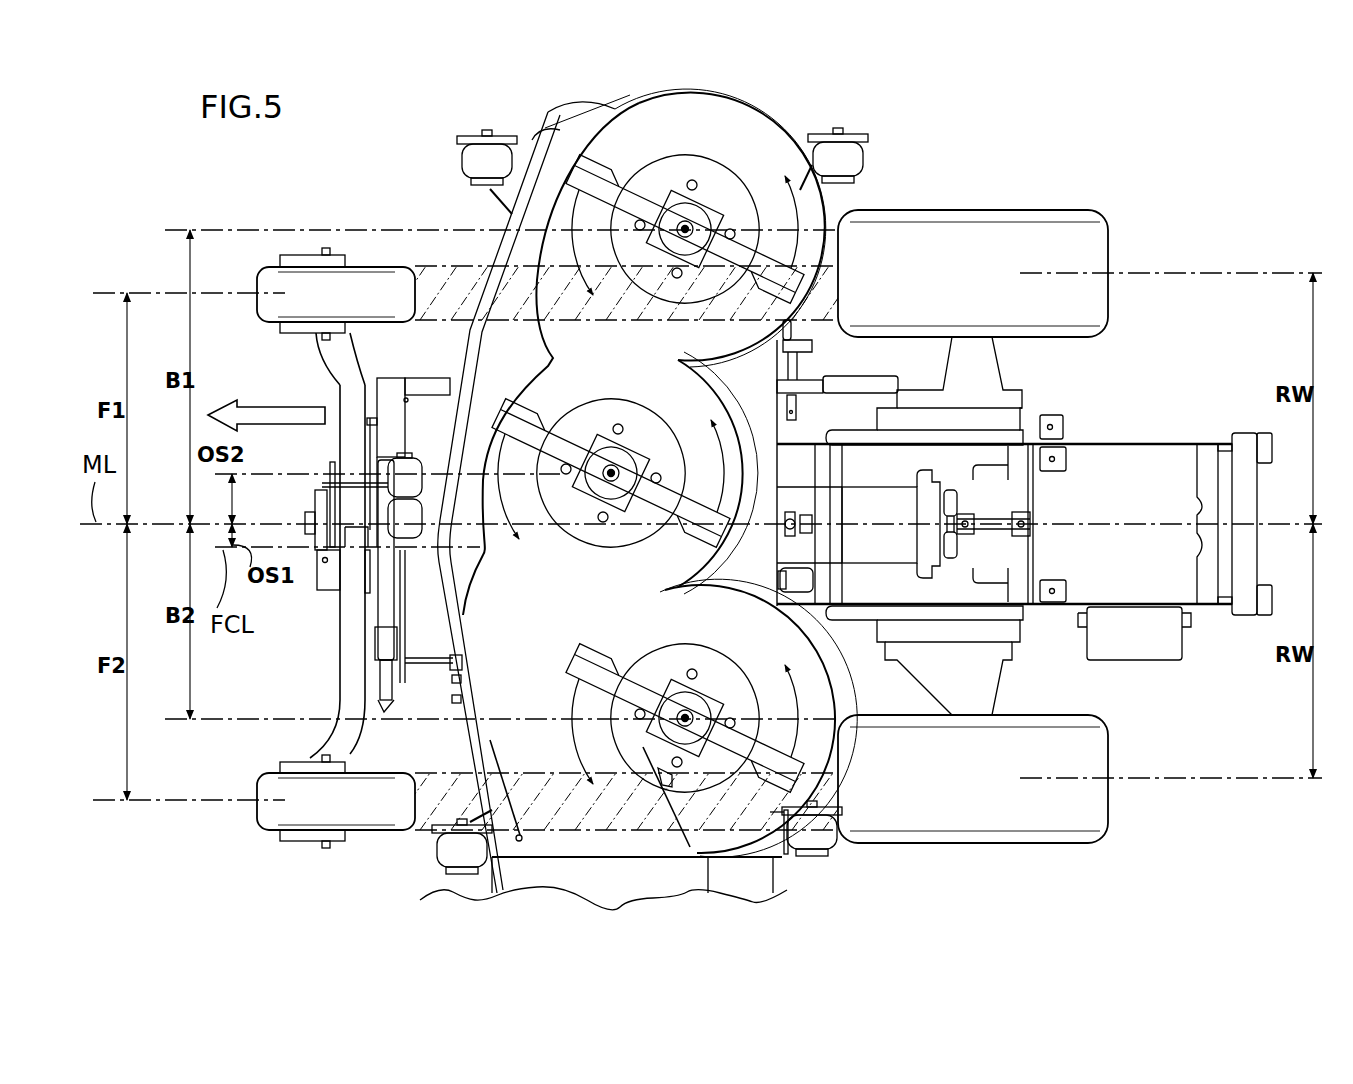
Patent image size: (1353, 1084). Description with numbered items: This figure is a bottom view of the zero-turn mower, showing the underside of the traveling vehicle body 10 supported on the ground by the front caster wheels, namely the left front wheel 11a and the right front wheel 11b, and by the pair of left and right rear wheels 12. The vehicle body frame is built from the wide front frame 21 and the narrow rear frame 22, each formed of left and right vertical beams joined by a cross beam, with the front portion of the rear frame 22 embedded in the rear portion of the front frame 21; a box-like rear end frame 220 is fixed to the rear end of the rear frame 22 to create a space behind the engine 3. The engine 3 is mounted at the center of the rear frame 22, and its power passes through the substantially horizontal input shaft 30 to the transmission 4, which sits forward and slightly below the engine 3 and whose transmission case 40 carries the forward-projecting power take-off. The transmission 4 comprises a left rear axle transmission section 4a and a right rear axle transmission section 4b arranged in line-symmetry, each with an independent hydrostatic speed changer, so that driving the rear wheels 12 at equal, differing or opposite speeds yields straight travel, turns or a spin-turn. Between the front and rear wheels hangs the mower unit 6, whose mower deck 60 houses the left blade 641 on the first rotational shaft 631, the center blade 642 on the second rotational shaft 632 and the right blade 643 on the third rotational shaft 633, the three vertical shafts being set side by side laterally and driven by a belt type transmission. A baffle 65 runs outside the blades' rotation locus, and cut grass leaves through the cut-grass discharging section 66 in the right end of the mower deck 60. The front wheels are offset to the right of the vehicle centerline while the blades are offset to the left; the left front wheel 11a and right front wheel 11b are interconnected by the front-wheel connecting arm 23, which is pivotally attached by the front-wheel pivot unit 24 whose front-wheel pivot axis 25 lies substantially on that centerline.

The traveling vehicle body 10 is at (272, 245).
The left front wheel 11a is at (368, 264).
The right front wheel 11b is at (262, 818).
The rear wheels 12 is at (1100, 252).
The front frame 21 is at (433, 387).
The rear frame 22 is at (1143, 441).
The rear end frame 220 is at (1250, 606).
The front-wheel connecting arm 23 is at (345, 638).
The front-wheel pivot unit 24 is at (312, 490).
The front-wheel pivot axis 25 is at (318, 520).
The engine 3 is at (1097, 466).
The input shaft 30 is at (980, 532).
The transmission 4 is at (955, 470).
The left rear axle transmission section 4a is at (955, 372).
The right rear axle transmission section 4b is at (990, 662).
The transmission case 40 is at (908, 505).
The mower unit 6 is at (437, 190).
The mower deck 60 is at (545, 126).
The left blade 641 is at (620, 195).
The center blade 642 is at (548, 432).
The right blade 643 is at (572, 660).
The first rotational shaft 631 is at (692, 226).
The second rotational shaft 632 is at (618, 470).
The third rotational shaft 633 is at (690, 714).
The baffle 65 is at (698, 582).
The cut-grass discharging section 66 is at (478, 890).